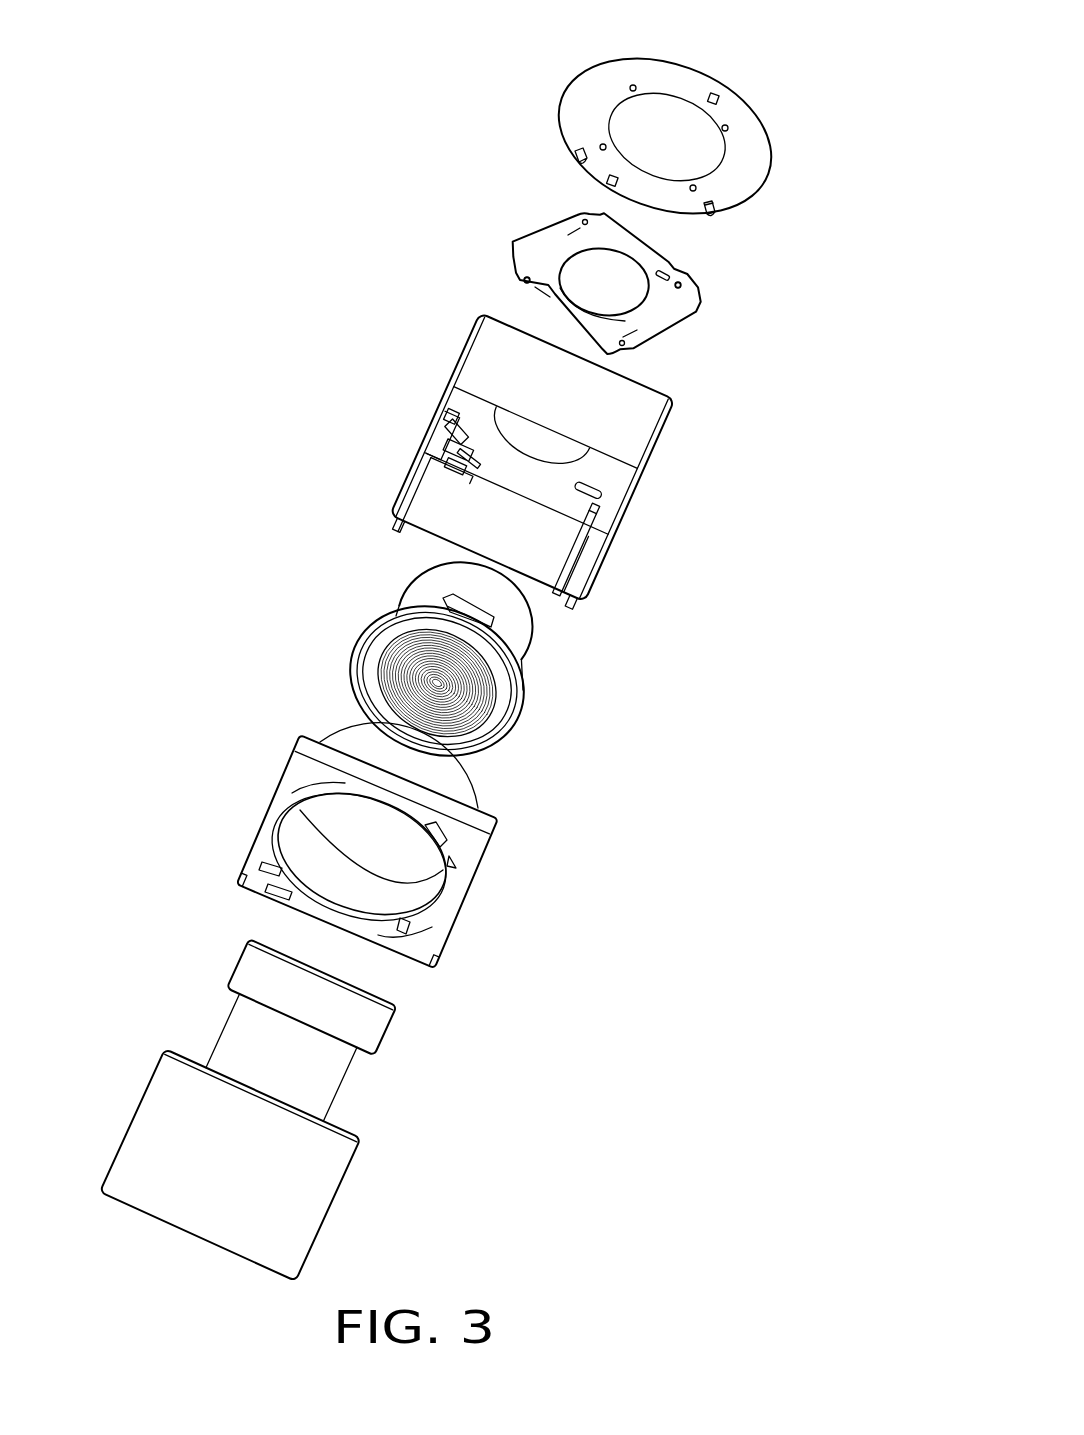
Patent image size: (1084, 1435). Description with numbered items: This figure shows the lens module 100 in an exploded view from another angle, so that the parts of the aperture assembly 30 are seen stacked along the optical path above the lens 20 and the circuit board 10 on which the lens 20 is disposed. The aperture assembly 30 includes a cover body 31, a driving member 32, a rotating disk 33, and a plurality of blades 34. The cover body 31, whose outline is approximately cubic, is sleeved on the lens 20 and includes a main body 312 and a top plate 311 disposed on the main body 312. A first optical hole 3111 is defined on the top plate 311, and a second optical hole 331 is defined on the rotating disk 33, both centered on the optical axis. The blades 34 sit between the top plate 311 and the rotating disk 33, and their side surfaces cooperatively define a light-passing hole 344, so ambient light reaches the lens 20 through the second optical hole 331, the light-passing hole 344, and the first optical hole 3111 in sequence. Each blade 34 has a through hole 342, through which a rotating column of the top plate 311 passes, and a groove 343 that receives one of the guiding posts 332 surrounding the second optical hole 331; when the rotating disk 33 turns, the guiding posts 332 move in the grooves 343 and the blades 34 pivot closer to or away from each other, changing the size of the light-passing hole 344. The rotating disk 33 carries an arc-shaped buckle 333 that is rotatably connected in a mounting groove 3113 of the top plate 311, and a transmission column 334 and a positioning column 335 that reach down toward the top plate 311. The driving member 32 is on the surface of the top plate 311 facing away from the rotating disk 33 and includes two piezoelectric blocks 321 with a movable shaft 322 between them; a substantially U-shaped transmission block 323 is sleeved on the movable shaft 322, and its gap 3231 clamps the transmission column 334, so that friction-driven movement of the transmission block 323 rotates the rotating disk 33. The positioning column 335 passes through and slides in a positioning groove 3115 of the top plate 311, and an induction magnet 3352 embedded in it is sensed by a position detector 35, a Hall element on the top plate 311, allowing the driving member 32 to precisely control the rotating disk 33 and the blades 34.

The lens module 100 is at (464, 14).
The circuit board 10 is at (318, 1207).
The lens 20 is at (492, 722).
The aperture assembly 30 is at (758, 412).
The cover body 31 is at (727, 473).
The top plate 311 is at (622, 490).
The main body 312 is at (637, 474).
The first optical hole 3111 is at (504, 408).
The mounting groove 3113 is at (473, 475).
The positioning groove 3115 is at (600, 497).
The driving member 32 is at (316, 404).
The piezoelectric blocks 321 is at (452, 425).
The movable shaft 322 is at (458, 470).
The transmission block 323 is at (446, 449).
The gap 3231 is at (440, 410).
The rotating disk 33 is at (758, 172).
The second optical hole 331 is at (662, 98).
The guiding posts 332 is at (730, 128).
The buckle 333 is at (722, 95).
The transmission column 334 is at (574, 161).
The positioning column 335 is at (716, 214).
The induction magnet 3352 is at (714, 207).
The blades 34 is at (693, 330).
The through hole 342 is at (699, 283).
The groove 343 is at (694, 276).
The light-passing hole 344 is at (560, 280).
The position detector 35 is at (597, 508).